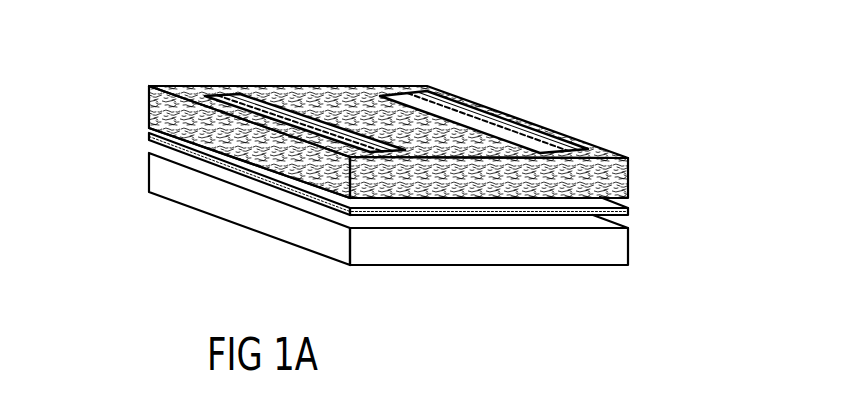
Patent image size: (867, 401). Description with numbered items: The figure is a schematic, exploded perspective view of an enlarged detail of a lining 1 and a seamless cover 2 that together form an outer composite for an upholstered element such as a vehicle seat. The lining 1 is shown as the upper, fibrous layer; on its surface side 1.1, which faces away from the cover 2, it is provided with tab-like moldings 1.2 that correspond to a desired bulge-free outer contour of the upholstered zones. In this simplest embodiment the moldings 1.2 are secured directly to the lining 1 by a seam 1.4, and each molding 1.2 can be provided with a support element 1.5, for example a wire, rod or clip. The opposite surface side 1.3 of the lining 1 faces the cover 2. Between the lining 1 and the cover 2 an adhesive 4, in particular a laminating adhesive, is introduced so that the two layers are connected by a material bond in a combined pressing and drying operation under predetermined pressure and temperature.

The lining 1 is at (375, 102).
The surface side 1.1 is at (366, 102).
The molding 1.2 is at (303, 110).
The surface side 1.3 is at (146, 131).
The seam 1.4 is at (231, 93).
The support element 1.5 is at (275, 100).
The adhesive 4 is at (630, 213).
The cover 2 is at (620, 255).